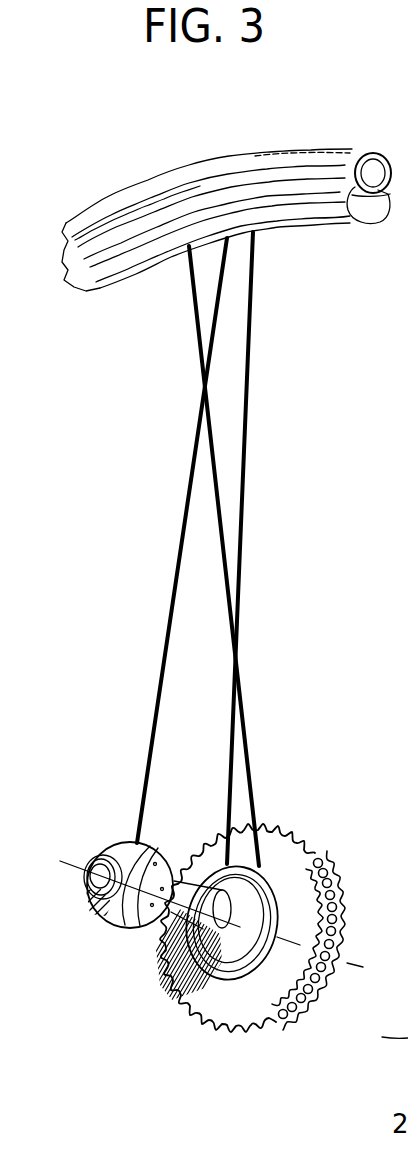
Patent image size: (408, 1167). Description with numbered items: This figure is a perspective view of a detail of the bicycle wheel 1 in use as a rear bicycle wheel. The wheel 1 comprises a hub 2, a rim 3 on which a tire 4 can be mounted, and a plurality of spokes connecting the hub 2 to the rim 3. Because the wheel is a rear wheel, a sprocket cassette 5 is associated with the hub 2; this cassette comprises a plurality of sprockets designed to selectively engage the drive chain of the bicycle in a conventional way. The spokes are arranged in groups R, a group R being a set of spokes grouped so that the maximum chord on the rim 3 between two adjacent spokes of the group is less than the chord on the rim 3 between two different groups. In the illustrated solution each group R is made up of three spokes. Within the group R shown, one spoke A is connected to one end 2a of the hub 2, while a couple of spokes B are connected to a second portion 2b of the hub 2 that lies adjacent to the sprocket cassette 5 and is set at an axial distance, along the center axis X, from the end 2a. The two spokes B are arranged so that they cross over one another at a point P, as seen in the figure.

The bicycle wheel 1 is at (86, 168).
The hub 2 is at (148, 935).
The end of the hub 2a is at (95, 908).
The second portion of the hub 2b is at (277, 900).
The rim 3 is at (330, 226).
The tire 4 is at (316, 148).
The sprocket cassette 5 is at (278, 1020).
The spoke A is at (157, 688).
The spokes B is at (247, 487).
The crossing point P is at (238, 650).
The group of spokes R is at (136, 523).
The center axis X is at (73, 863).